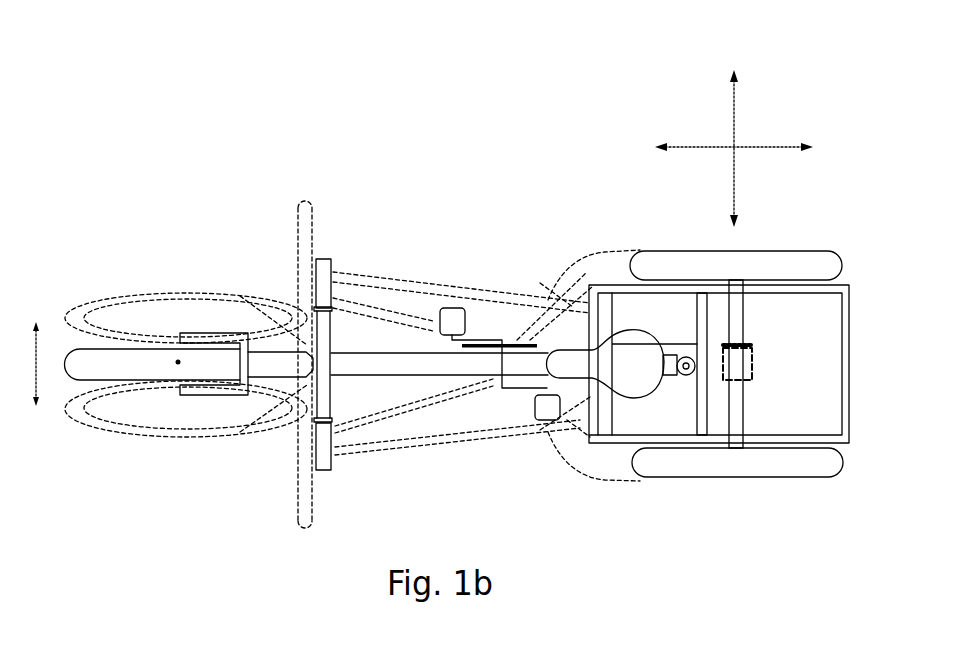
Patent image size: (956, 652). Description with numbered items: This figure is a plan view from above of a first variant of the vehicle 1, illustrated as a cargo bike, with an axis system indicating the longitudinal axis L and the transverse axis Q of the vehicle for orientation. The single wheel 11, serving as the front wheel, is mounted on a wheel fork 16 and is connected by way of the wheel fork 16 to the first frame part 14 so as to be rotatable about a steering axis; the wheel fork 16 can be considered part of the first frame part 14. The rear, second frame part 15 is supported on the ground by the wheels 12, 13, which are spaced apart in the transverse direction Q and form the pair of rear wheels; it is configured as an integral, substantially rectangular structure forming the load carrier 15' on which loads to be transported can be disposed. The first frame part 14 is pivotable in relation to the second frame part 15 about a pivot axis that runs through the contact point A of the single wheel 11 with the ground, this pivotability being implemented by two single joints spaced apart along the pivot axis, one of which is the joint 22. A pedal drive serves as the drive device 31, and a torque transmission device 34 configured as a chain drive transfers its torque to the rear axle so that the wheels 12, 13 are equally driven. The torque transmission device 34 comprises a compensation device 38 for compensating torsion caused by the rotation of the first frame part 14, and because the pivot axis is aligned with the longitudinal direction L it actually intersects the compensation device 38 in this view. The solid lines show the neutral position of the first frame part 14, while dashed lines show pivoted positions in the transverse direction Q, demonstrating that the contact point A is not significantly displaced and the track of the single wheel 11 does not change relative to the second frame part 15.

The vehicle 1 is at (78, 90).
The single wheel 11 is at (127, 358).
The wheel 12 is at (763, 255).
The wheel 13 is at (765, 465).
The first frame part 14 is at (380, 358).
The second frame part 15 is at (693, 318).
The load carrier 15' is at (538, 481).
The wheel fork 16 is at (227, 337).
The joint 22 is at (695, 364).
The drive device 31 is at (488, 313).
The torque transmission device 34 is at (670, 317).
The compensation device 38 is at (754, 361).
The contact point A is at (170, 371).
The transverse axis Q is at (748, 147).
The longitudinal axis L is at (730, 132).